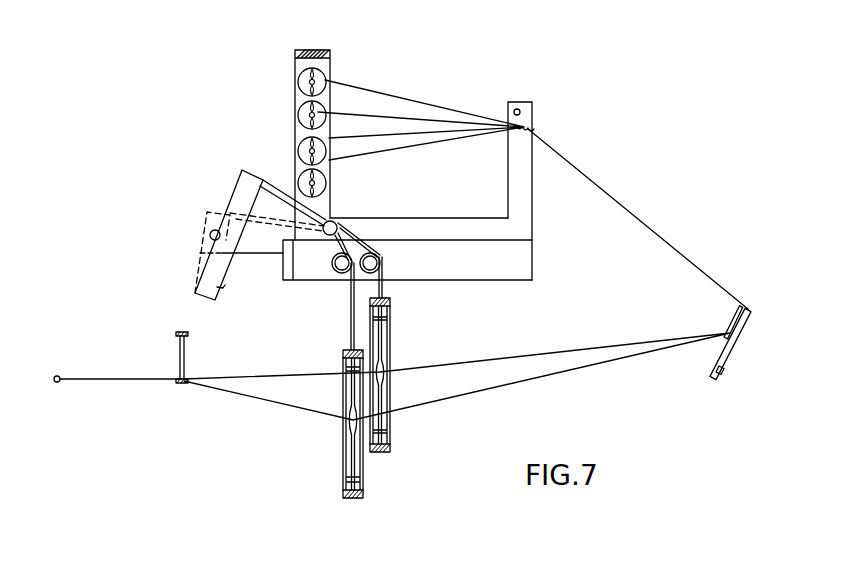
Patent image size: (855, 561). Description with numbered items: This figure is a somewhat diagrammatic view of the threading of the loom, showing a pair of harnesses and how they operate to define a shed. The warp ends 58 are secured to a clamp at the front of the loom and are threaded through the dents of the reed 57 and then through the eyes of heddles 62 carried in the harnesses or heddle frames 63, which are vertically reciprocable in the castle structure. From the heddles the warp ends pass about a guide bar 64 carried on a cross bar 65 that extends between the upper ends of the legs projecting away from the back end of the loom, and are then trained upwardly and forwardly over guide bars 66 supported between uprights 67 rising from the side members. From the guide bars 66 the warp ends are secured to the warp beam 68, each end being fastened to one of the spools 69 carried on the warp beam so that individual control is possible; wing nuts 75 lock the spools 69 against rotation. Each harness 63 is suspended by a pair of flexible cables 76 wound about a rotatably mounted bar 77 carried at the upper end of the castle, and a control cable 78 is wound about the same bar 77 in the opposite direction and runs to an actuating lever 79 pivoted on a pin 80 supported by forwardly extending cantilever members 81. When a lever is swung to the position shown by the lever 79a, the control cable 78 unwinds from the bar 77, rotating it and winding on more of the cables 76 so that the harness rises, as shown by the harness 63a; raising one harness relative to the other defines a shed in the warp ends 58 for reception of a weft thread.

The reed 57 is at (185, 357).
The warp ends 58 is at (130, 380).
The heddles 62 is at (347, 450).
The harness 63 is at (366, 497).
The harness in raised position 63a is at (383, 455).
The guide bar 64 is at (752, 307).
The cross bar 65 is at (728, 374).
The guide bars 66 is at (528, 129).
The uprights 67 is at (522, 185).
The warp beam 68 is at (318, 53).
The spools 69 is at (318, 112).
The wing nuts 75 is at (298, 88).
The suspending cables 76 is at (382, 278).
The rotatably mounted bar 77 is at (368, 272).
The control cable 78 is at (340, 228).
The actuating lever 79 is at (238, 172).
The actuating lever in moved position 79a is at (193, 292).
The pin 80 is at (203, 244).
The cantilever members 81 is at (253, 245).